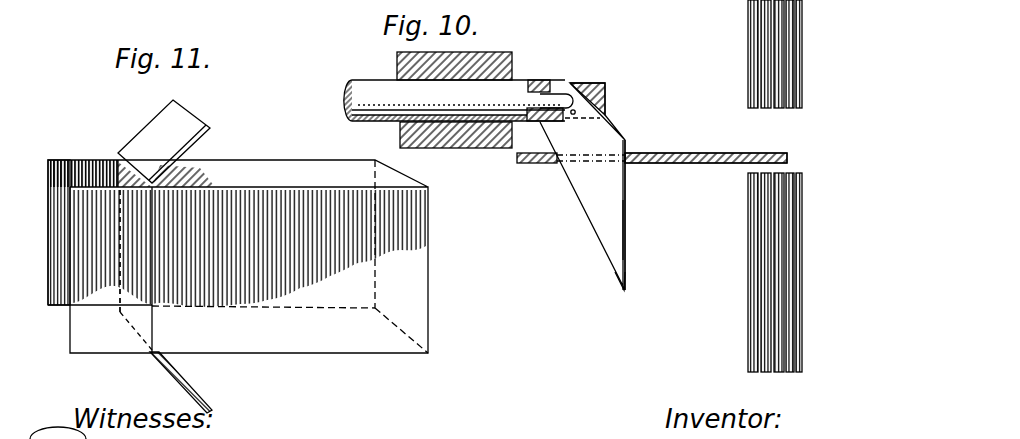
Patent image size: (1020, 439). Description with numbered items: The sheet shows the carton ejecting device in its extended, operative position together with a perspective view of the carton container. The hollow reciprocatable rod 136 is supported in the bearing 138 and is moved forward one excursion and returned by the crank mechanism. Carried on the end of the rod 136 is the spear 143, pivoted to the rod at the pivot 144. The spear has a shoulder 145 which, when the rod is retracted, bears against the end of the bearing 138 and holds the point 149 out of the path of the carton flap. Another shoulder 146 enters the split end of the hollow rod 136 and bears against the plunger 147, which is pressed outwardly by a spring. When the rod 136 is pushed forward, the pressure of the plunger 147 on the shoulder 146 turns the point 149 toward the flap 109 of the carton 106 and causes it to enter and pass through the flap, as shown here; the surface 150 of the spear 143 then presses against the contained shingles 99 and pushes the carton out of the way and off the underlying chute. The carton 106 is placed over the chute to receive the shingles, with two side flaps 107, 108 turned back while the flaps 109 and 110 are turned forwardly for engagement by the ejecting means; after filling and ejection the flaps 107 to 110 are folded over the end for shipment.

In FIG. 10, the shingles 99 is at (750, 36).
In FIG. 11, the carton 106 is at (420, 277).
In FIG. 10, the carton 106 is at (712, 154).
In FIG. 11, the side flap 107 is at (193, 126).
In FIG. 11, the side flap 108 is at (199, 396).
In FIG. 11, the flap 109 is at (88, 157).
In FIG. 10, the flap 109 is at (650, 156).
In FIG. 11, the flap 110 is at (102, 251).
In FIG. 10, the reciprocatable rod 136 is at (432, 100).
In FIG. 10, the bearing 138 is at (490, 53).
In FIG. 10, the spear 143 is at (617, 133).
In FIG. 10, the pivot 144 is at (606, 135).
In FIG. 10, the shoulder 145 is at (548, 122).
In FIG. 10, the shoulder 146 is at (577, 112).
In FIG. 10, the plunger 147 is at (547, 100).
In FIG. 10, the point 149 is at (628, 288).
In FIG. 10, the surface 150 is at (641, 210).